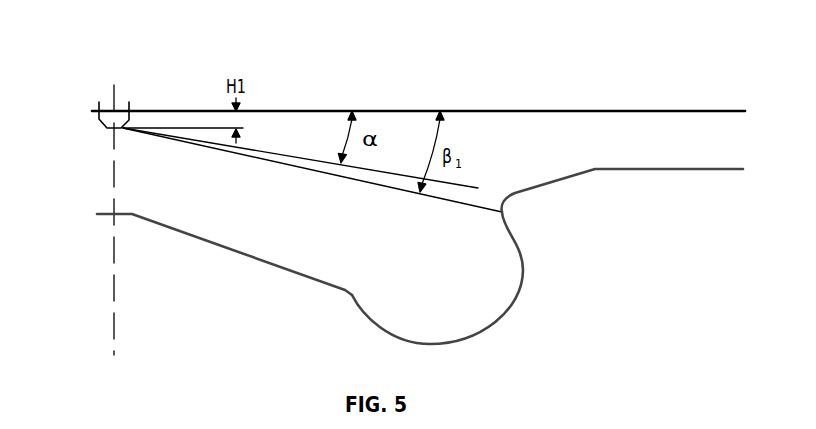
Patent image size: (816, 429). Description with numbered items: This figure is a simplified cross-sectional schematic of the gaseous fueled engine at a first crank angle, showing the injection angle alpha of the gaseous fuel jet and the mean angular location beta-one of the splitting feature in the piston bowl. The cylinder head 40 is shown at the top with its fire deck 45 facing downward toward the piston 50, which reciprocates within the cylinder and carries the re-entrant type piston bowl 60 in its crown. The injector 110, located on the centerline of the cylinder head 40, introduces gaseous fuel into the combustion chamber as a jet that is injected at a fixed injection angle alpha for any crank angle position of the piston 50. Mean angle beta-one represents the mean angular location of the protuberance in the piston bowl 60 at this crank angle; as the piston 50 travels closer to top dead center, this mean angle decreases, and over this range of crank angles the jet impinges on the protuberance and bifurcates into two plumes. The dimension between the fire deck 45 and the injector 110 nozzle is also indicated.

The cylinder head 40 is at (292, 110).
The fire deck 45 is at (537, 113).
The piston 50 is at (690, 170).
The re-entrant type piston bowl 60 is at (270, 263).
The injector 110 is at (95, 110).